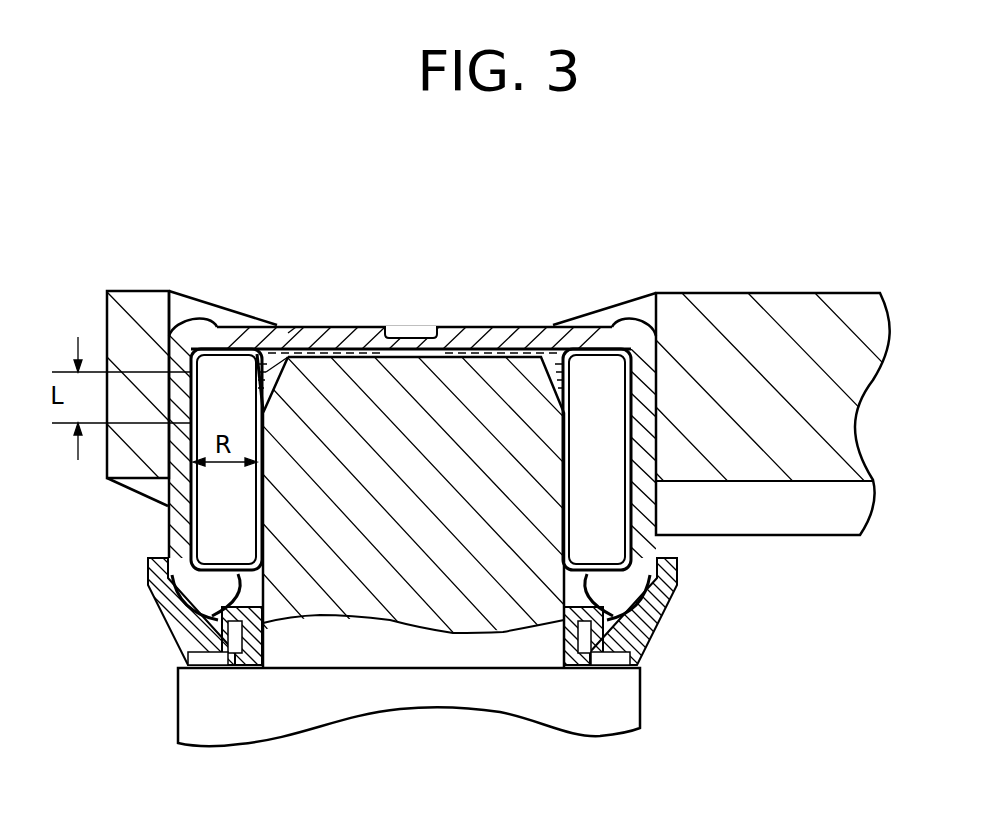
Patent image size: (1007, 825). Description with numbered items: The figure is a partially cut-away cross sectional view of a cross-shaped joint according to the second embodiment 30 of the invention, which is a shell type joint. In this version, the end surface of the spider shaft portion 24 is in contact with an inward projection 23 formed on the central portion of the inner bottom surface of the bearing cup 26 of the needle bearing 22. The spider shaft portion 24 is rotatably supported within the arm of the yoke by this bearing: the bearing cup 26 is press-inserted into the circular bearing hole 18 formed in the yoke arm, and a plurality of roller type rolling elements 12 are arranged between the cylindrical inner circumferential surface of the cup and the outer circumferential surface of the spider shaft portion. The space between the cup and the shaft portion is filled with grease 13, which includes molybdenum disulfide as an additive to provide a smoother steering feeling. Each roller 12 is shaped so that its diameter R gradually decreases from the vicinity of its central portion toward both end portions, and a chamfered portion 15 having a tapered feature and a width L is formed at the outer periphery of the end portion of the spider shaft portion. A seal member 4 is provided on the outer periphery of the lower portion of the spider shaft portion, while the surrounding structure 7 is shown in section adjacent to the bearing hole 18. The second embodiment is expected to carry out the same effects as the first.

The seal member 4 is at (163, 590).
The housing 7 is at (723, 310).
The roller type rolling elements 12 is at (607, 542).
The grease 13 is at (263, 365).
The chamfered portion 15 is at (257, 384).
The bearing hole 18 is at (637, 310).
The needle bearing 22 is at (328, 326).
The inward projection 23 is at (432, 360).
The spider shaft portion 24 is at (275, 498).
The bearing cup 26 is at (292, 332).
The second embodiment 30 is at (407, 309).